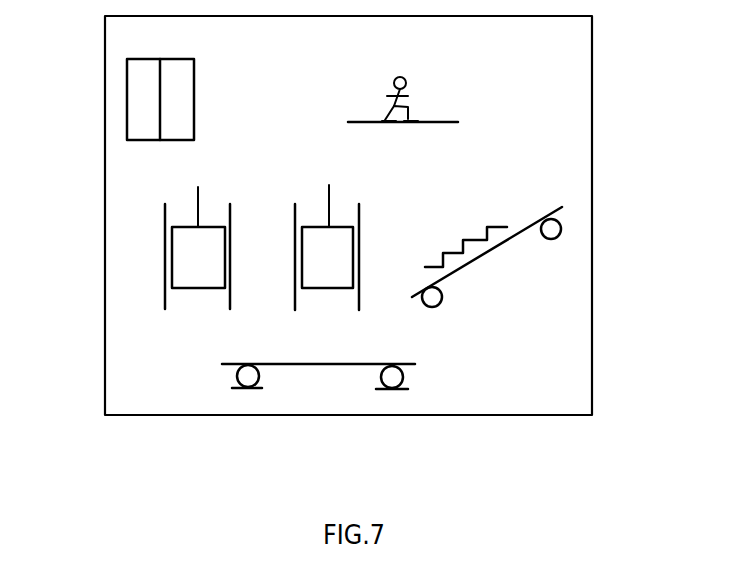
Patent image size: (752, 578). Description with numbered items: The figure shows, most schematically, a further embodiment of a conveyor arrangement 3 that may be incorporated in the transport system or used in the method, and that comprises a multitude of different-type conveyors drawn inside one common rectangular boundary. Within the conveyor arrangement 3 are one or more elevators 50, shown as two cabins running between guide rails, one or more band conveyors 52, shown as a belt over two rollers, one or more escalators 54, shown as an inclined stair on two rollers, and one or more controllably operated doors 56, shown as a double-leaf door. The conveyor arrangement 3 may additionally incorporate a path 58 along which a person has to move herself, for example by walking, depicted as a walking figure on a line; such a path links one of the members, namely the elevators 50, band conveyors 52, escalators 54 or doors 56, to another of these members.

The conveyor arrangement 3 is at (592, 67).
The elevators 50 is at (148, 261).
The band conveyors 52 is at (327, 383).
The escalators 54 is at (483, 265).
The controllably operated doors 56 is at (138, 97).
The treadmill 58 is at (415, 127).